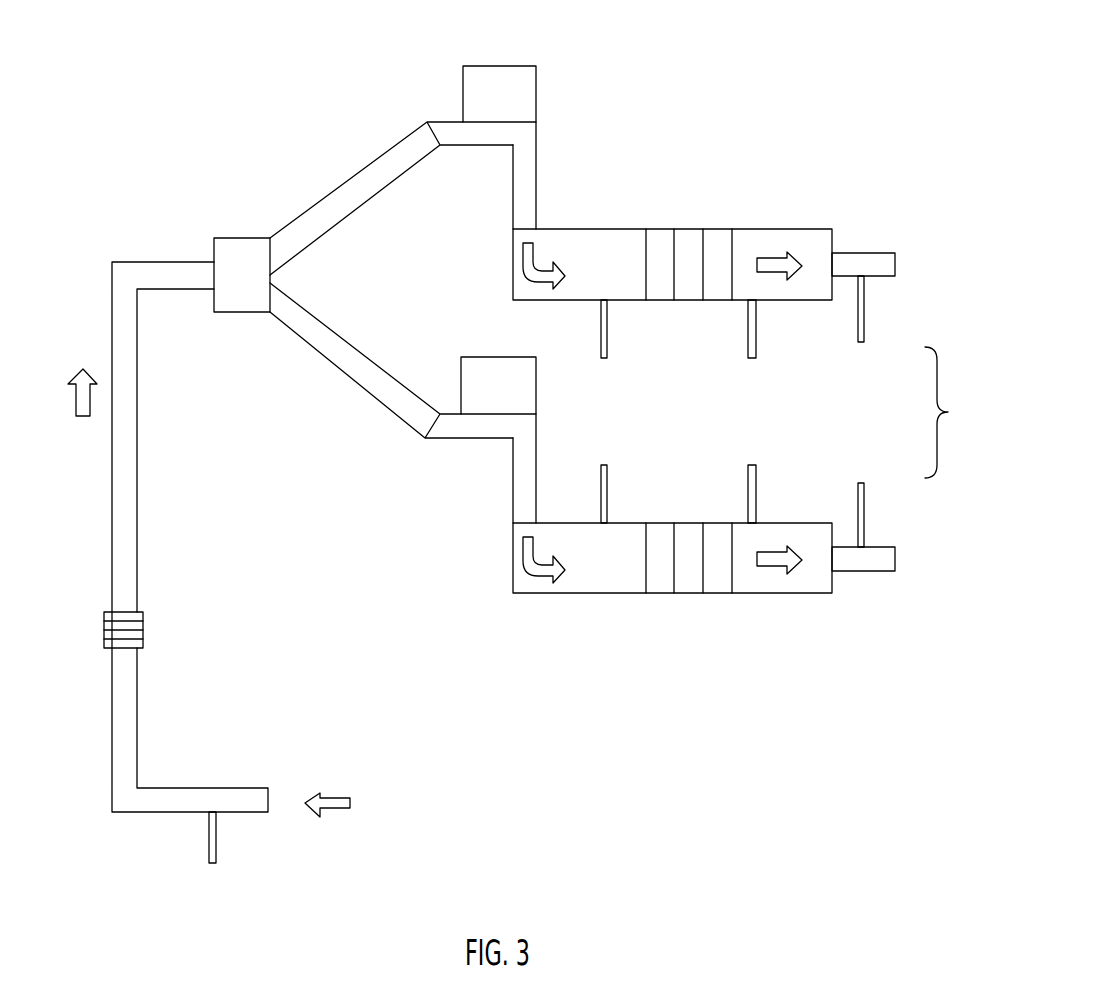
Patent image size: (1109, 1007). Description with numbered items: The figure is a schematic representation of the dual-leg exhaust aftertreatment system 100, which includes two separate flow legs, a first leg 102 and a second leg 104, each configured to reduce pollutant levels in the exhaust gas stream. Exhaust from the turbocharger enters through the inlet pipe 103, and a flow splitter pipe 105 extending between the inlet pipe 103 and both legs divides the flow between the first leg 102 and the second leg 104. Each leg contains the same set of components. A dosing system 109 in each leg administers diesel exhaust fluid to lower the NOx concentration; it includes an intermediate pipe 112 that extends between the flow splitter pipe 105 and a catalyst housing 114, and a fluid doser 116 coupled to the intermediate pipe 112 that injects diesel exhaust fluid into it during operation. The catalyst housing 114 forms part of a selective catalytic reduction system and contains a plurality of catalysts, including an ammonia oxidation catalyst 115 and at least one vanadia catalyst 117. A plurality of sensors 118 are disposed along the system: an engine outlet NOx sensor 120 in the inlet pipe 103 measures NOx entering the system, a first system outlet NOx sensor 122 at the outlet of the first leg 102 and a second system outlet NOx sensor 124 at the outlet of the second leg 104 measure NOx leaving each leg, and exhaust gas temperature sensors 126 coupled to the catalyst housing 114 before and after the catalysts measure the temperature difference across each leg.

The aftertreatment system 100 is at (151, 190).
The first leg 102 is at (737, 140).
The inlet pipe 103 is at (127, 490).
The second leg 104 is at (812, 612).
The flow splitter pipe 105 is at (250, 238).
The dosing system 109 is at (535, 42).
The intermediate pipe 112 is at (527, 178).
The catalyst housing 114 is at (800, 229).
The ammonia oxidation catalyst 115 is at (716, 588).
The fluid doser 116 is at (530, 99).
The vanadia catalyst 117 is at (663, 585).
The sensors 118 is at (948, 412).
The engine outlet NOx sensor 120 is at (209, 836).
The first system outlet NOx sensor 122 is at (862, 298).
The second system outlet NOx sensor 124 is at (860, 528).
The exhaust gas temperature sensors 126 is at (600, 332).